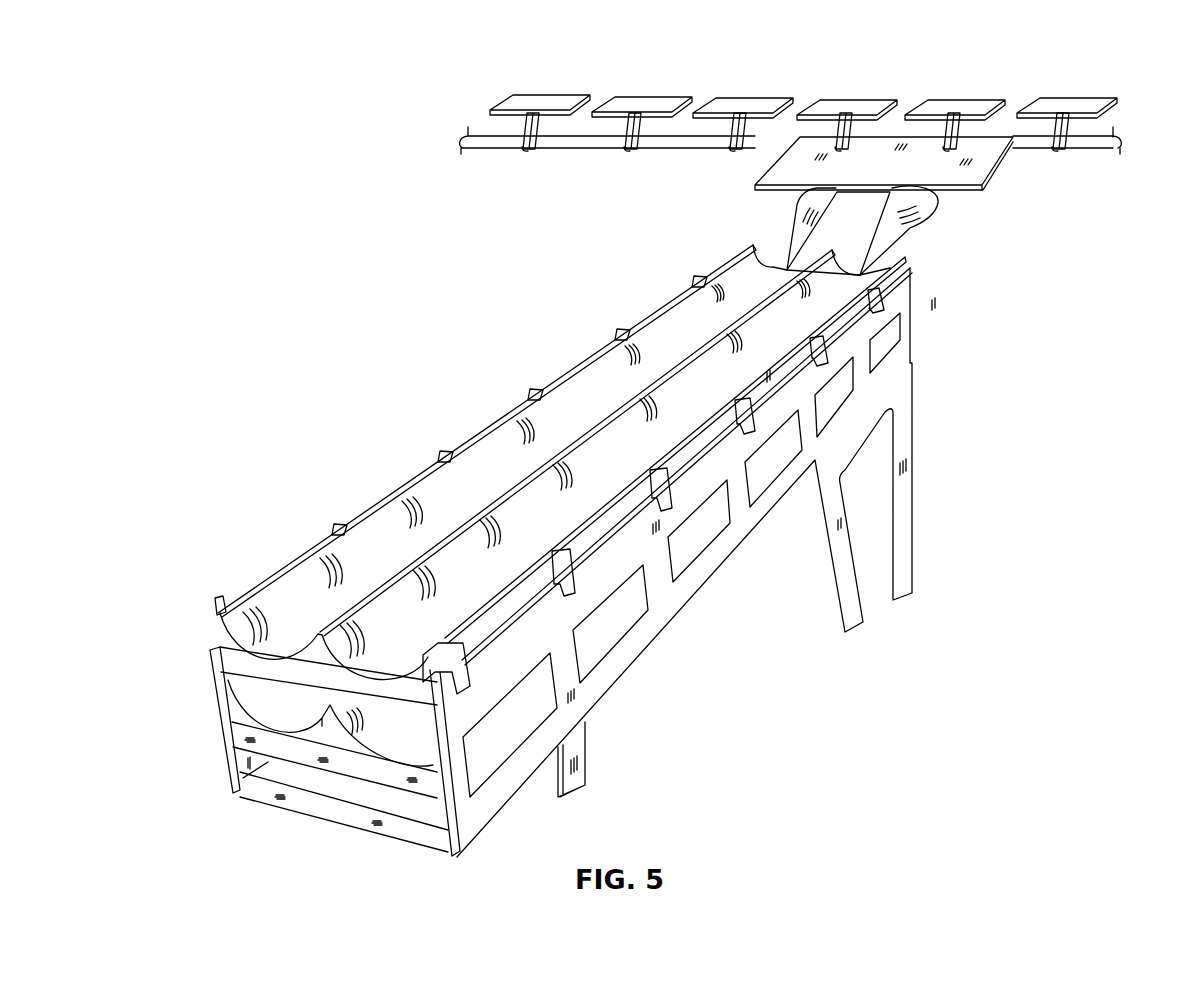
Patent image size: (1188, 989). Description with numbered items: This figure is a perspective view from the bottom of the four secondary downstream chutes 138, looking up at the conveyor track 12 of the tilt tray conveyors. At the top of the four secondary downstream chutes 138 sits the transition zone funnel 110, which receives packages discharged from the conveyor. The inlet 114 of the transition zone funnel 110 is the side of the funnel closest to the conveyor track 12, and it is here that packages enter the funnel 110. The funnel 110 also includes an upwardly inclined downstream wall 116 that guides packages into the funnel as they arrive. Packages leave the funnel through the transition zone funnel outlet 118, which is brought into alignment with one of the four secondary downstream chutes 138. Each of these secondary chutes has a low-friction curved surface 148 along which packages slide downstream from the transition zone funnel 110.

The conveyor track 12 is at (1087, 150).
The transition zone funnel 110 is at (787, 240).
The inlet 114 is at (860, 187).
The upwardly inclined downstream wall 116 is at (900, 228).
The transition zone funnel outlet 118 is at (778, 265).
The secondary downstream chute 138 is at (755, 392).
The low-friction curved surface 148 is at (705, 387).